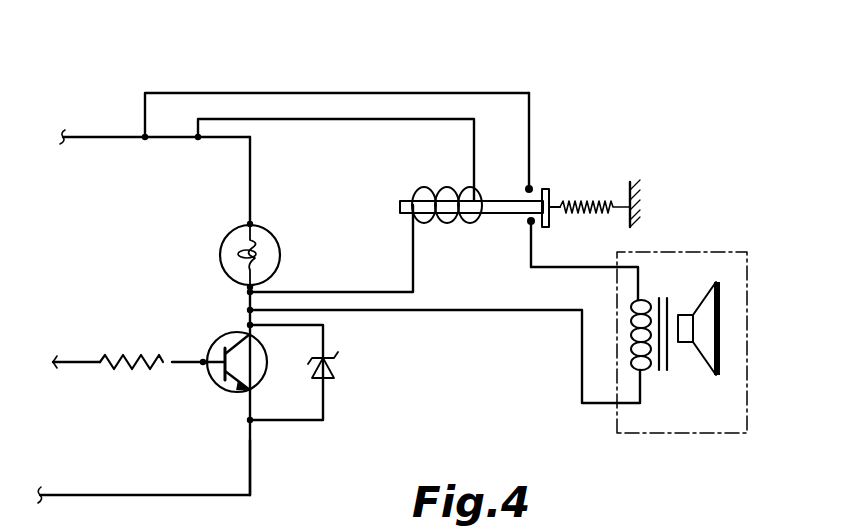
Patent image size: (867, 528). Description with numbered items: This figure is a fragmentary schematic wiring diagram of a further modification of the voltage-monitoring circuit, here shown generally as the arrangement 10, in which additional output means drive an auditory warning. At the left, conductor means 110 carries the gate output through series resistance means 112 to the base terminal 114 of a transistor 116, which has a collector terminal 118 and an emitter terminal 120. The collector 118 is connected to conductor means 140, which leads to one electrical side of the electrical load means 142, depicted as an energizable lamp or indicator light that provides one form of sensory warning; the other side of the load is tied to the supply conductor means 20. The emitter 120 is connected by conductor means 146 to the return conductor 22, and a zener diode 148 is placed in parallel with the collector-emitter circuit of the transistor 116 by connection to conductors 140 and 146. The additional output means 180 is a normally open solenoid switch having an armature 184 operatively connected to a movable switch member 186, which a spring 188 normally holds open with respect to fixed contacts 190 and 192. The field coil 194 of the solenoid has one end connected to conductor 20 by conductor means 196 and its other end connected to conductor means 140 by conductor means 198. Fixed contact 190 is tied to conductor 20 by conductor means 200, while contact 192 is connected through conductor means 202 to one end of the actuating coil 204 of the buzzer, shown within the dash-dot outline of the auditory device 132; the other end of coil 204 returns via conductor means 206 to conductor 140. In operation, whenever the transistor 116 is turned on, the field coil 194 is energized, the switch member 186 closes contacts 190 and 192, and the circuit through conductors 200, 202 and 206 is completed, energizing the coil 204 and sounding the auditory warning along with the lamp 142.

The alarm device 10 is at (668, 149).
The conductor means 20 is at (88, 137).
The conductor 22 is at (142, 495).
The conductor means 110 is at (78, 362).
The series resistance means 112 is at (120, 358).
The base terminal 114 is at (212, 377).
The transistor 116 is at (268, 370).
The collector terminal 118 is at (231, 345).
The emitter terminal 120 is at (238, 395).
The speaker assembly 132 is at (690, 247).
The conductor means 140 is at (241, 290).
The electrical load means 142 is at (278, 233).
The conductor means 146 is at (250, 469).
The zener diode 148 is at (336, 364).
The output means 180 is at (458, 214).
The armature 184 is at (404, 200).
The movable switch member 186 is at (550, 194).
The spring 188 is at (586, 200).
The fixed contact 190 is at (529, 189).
The fixed contact 192 is at (531, 223).
The field coil 194 is at (440, 186).
The conductor means 196 is at (345, 119).
The conductor means 198 is at (330, 292).
The conductor means 200 is at (410, 93).
The conductor means 202 is at (551, 267).
The actuating coil 204 is at (632, 320).
The conductor means 206 is at (458, 312).